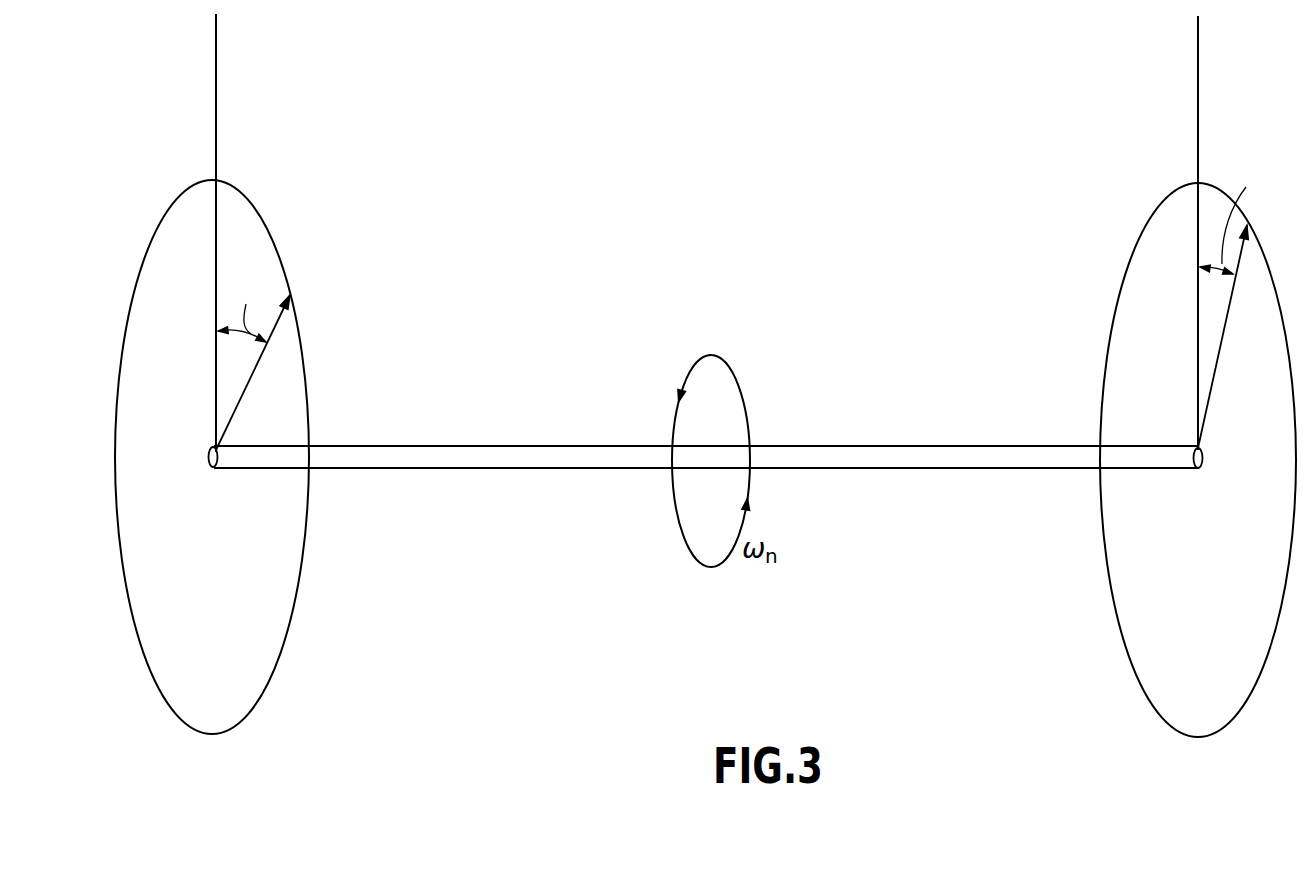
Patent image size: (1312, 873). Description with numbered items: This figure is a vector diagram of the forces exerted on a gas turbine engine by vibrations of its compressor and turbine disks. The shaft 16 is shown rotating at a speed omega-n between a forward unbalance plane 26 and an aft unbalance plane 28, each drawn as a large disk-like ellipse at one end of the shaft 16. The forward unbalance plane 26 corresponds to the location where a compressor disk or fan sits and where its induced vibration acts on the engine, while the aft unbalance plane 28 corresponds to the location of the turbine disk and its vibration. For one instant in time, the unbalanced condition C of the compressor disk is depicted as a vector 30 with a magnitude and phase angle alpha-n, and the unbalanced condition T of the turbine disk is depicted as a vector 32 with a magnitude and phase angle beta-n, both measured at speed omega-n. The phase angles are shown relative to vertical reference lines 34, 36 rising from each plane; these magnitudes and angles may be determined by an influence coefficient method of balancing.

The shaft 16 is at (485, 469).
The forward unbalance plane 26 is at (208, 735).
The aft unbalance plane 28 is at (1160, 714).
The vector 30 is at (278, 318).
The vector 32 is at (1240, 262).
The vertical reference line 34 is at (216, 60).
The vertical reference line 36 is at (1199, 60).